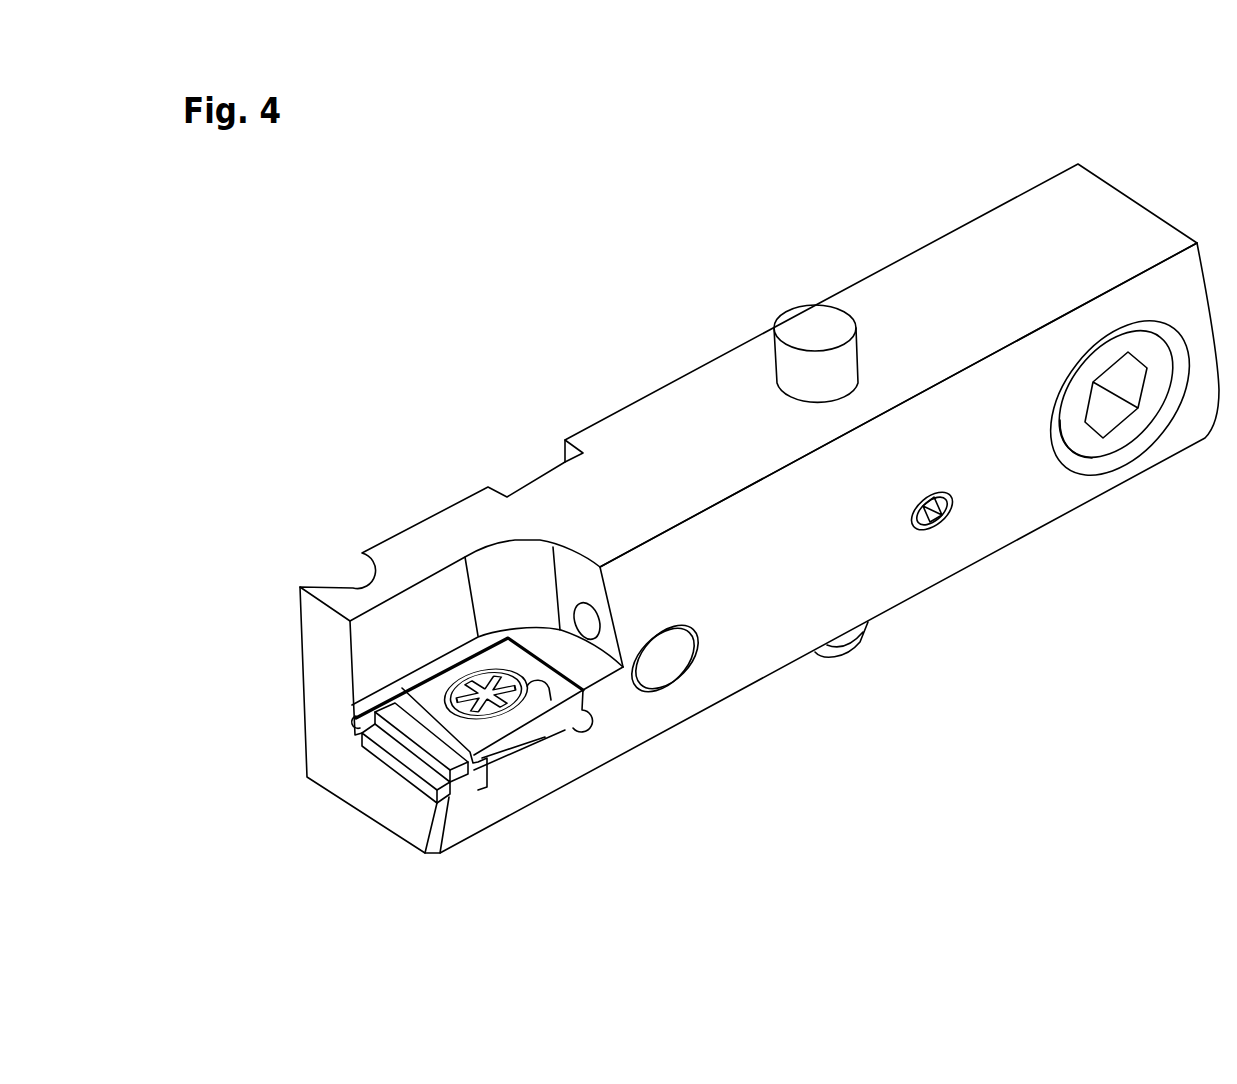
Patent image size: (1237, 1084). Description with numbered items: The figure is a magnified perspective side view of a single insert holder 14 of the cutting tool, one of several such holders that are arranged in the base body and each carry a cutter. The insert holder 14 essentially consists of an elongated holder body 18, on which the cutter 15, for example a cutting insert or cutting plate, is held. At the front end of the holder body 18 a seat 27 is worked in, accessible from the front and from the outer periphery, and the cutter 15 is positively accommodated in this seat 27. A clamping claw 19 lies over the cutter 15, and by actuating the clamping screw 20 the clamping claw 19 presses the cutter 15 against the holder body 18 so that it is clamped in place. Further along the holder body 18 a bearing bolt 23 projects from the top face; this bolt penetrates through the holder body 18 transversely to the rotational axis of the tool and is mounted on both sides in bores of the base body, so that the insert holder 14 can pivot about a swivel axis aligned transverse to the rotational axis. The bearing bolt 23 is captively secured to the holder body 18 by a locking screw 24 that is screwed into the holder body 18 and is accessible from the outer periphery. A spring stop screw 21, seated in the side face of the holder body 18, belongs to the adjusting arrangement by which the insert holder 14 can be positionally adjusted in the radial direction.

The insert holder 14 is at (871, 723).
The cutter 15 is at (467, 785).
The holder body 18 is at (1047, 492).
The clamping claw 19 is at (520, 737).
The clamping screw 20 is at (551, 700).
The spring stop screw 21 is at (1130, 427).
The bearing bolt 23 is at (793, 327).
The locking screw 24 is at (937, 520).
The seat 27 is at (392, 728).